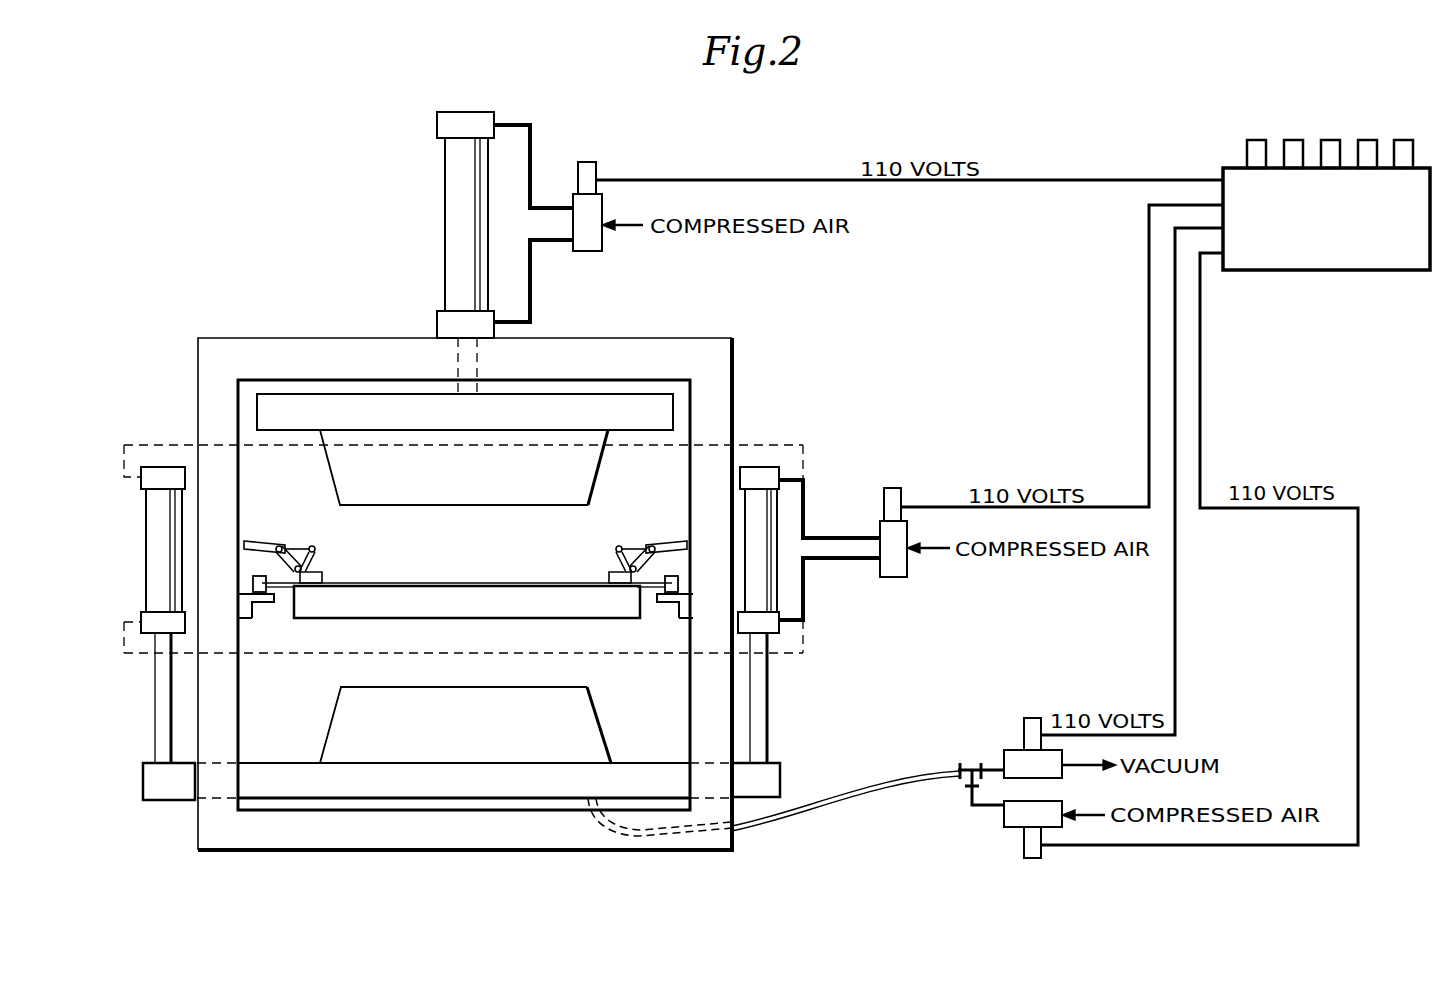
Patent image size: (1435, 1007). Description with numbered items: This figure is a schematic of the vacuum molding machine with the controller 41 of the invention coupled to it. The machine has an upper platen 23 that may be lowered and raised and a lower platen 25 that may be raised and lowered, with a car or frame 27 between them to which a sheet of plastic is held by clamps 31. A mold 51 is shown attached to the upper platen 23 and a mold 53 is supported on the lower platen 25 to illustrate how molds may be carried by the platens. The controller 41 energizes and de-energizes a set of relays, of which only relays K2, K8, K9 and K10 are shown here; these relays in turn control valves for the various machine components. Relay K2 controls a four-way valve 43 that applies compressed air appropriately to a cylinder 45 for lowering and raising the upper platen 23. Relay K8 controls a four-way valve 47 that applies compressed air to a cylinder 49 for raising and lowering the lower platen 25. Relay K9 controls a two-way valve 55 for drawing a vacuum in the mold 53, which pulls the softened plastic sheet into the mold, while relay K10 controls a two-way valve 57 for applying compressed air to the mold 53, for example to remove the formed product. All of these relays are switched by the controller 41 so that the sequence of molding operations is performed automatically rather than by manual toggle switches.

The upper platen 23 is at (673, 414).
The lower platen 25 is at (780, 778).
The car or frame 27 is at (466, 618).
The clamps 31 is at (314, 552).
The controller 41 is at (1305, 272).
The 4-way valve 43 is at (585, 251).
The cylinder 45 is at (445, 229).
The 4-way valve 47 is at (896, 577).
The cylinder 49 is at (777, 591).
The mold 51 is at (497, 505).
The mold 53 is at (338, 702).
The 2-way valve 55 is at (1004, 760).
The 2-way valve 57 is at (1015, 827).
The relay K2 is at (587, 162).
The relay K8 is at (890, 488).
The relay K9 is at (1033, 718).
The relay K10 is at (1030, 858).